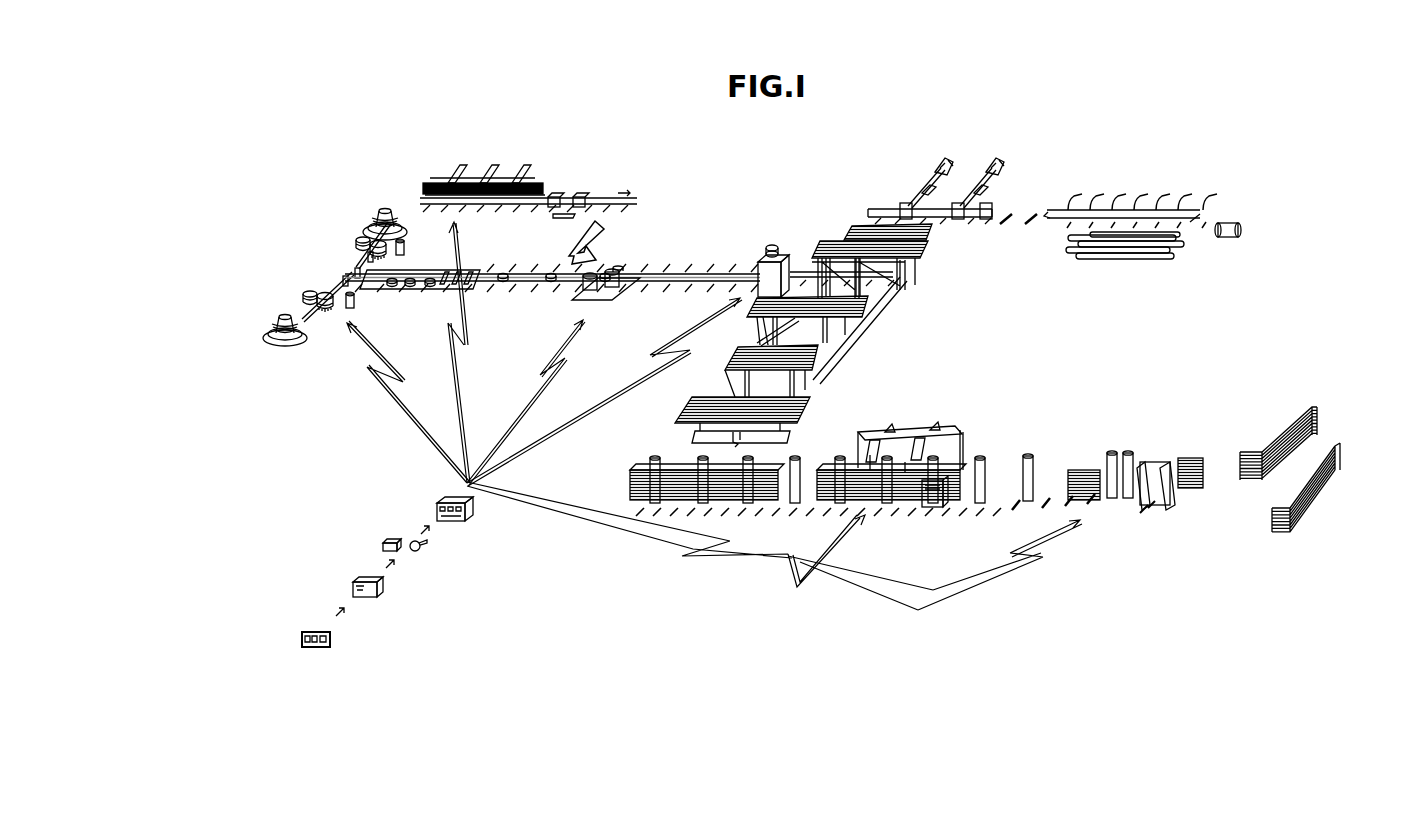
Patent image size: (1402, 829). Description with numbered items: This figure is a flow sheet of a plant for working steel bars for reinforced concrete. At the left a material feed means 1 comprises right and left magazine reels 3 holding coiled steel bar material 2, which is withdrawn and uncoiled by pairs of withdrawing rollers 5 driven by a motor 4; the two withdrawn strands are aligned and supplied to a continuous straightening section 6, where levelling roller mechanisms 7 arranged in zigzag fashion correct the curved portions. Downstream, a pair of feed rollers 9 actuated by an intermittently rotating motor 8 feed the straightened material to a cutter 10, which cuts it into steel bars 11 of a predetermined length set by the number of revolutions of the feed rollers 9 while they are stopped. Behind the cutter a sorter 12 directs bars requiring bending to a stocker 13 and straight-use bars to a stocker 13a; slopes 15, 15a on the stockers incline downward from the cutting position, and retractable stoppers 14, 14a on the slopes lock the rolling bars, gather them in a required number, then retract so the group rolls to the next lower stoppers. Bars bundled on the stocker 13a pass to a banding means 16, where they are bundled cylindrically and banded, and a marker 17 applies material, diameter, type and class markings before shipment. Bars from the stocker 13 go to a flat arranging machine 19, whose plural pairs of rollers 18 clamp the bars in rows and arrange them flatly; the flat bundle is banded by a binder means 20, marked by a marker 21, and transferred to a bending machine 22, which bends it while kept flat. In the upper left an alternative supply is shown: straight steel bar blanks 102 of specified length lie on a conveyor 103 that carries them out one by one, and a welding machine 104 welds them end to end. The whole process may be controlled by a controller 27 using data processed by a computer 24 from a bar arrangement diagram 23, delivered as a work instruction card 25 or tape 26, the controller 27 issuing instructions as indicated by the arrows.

The material feed means 1 is at (266, 352).
The steel bar material 2 is at (371, 248).
The magazine reel 3 is at (380, 212).
The motor 4 is at (406, 250).
The withdrawing roller 5 is at (360, 240).
The continuous straightening section 6 is at (487, 296).
The levelling roller mechanism 7 is at (430, 289).
The motor 8 is at (590, 285).
The feed roller 9 is at (612, 270).
The cutter 10 is at (765, 265).
The steel bar 11 is at (887, 225).
The sorter 12 is at (890, 298).
The stocker 13 is at (828, 379).
The stocker 13a is at (931, 278).
The stopper 14 is at (772, 320).
The stopper 14a is at (850, 237).
The slope 15 is at (758, 338).
The slope 15a is at (818, 256).
The banding means 16 is at (987, 165).
The marker 17 is at (990, 202).
The roller 18 is at (652, 505).
The flat arranging machine 19 is at (686, 524).
The binder means 20 is at (950, 418).
The marker 21 is at (930, 512).
The bending machine 22 is at (1165, 458).
The bar arrangement diagram 23 is at (303, 631).
The computer 24 is at (353, 583).
The work instruction card 25 is at (383, 545).
The tape 26 is at (425, 548).
The controller 27 is at (468, 522).
The steel bar blank 102 is at (453, 178).
The conveyor 103 is at (490, 173).
The welding machine 104 is at (578, 197).